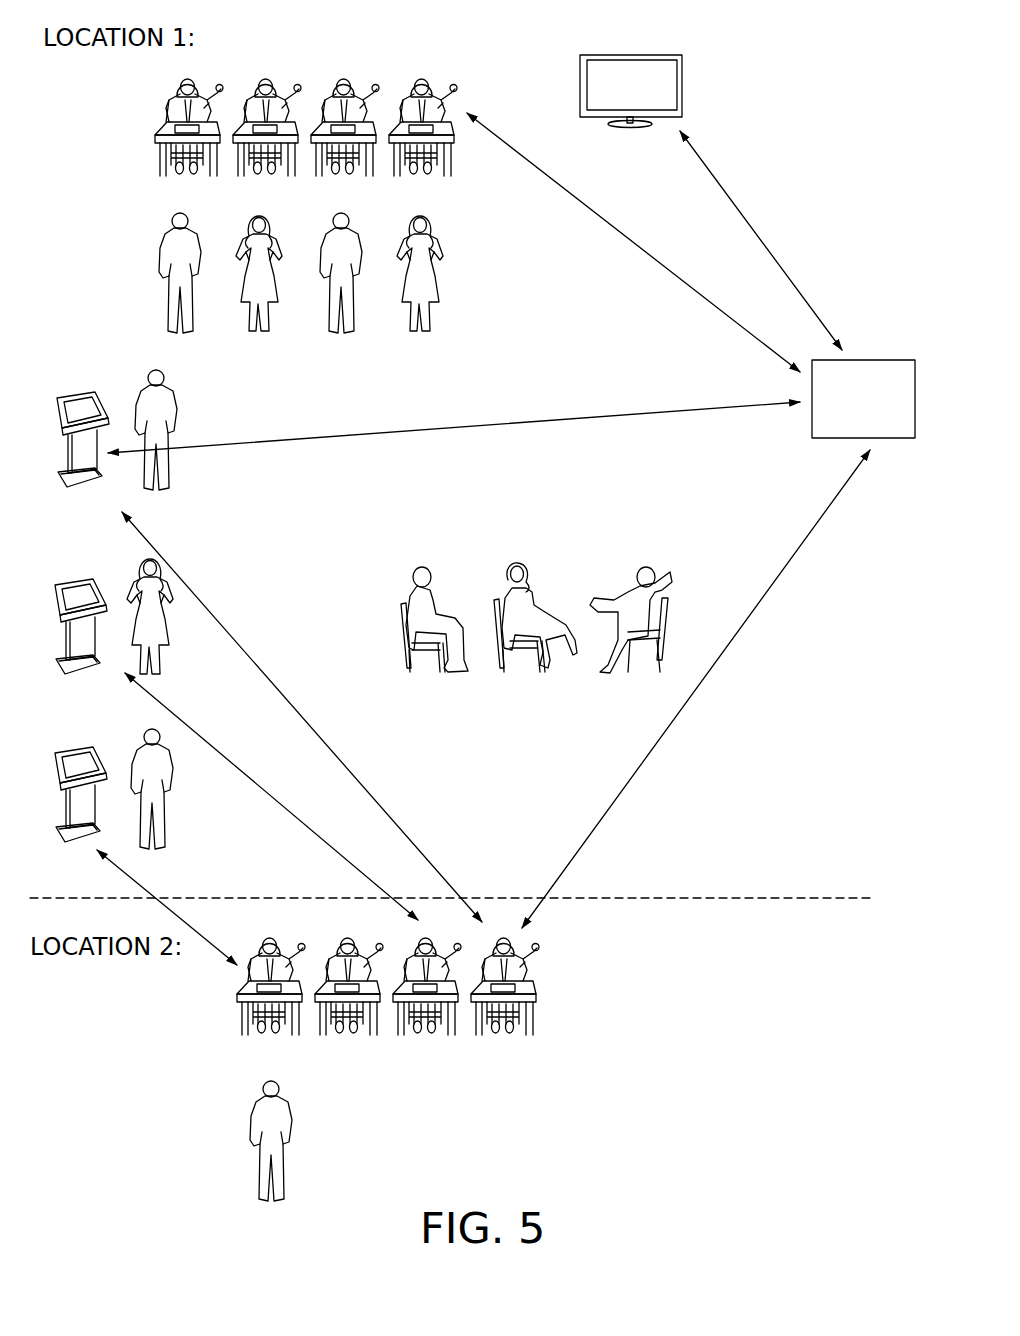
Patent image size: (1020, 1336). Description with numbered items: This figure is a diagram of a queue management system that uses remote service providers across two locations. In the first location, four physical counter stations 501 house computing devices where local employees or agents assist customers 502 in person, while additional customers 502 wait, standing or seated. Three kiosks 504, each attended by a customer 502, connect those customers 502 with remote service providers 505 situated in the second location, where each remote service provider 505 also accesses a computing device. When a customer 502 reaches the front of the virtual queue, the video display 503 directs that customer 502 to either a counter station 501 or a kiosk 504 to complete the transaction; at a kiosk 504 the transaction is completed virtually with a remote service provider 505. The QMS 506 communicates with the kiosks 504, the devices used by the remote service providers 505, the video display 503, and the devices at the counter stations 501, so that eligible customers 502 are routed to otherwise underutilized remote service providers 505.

The physical counter station 501 is at (168, 105).
The customer 502 is at (157, 240).
The video display 503 is at (580, 80).
The kiosk 504 is at (75, 393).
The remote service provider 505 is at (252, 962).
The QMS 506 is at (886, 428).